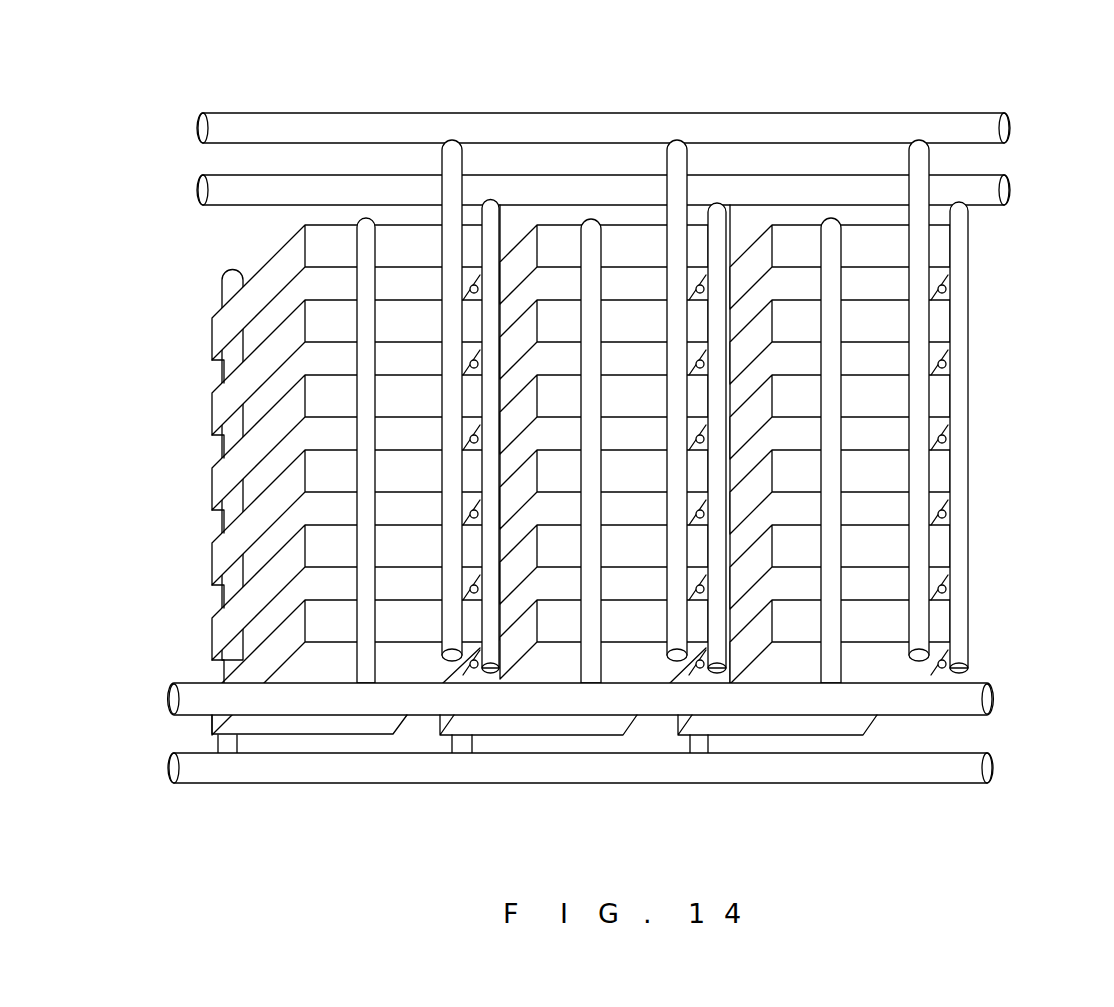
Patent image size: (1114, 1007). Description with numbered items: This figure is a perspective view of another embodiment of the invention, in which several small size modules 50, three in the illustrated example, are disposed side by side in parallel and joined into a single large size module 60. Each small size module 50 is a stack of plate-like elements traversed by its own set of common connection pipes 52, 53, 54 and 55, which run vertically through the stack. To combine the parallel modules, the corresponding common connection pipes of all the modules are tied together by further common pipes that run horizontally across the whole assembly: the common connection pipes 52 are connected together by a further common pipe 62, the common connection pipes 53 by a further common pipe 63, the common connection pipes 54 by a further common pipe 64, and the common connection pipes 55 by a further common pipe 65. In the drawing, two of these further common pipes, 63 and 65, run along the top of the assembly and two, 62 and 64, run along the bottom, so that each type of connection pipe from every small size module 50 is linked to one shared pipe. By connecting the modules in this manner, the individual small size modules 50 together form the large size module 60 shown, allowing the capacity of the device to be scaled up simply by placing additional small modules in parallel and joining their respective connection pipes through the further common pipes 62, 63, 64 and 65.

The small size module 50 is at (597, 443).
The common connection pipe 52 is at (363, 543).
The common connection pipe 53 is at (447, 469).
The common connection pipe 54 is at (216, 745).
The common connection pipe 55 is at (488, 200).
The large size module 60 is at (594, 443).
The further common pipe 62 is at (975, 695).
The further common pipe 63 is at (368, 118).
The further common pipe 64 is at (935, 770).
The further common pipe 65 is at (255, 196).